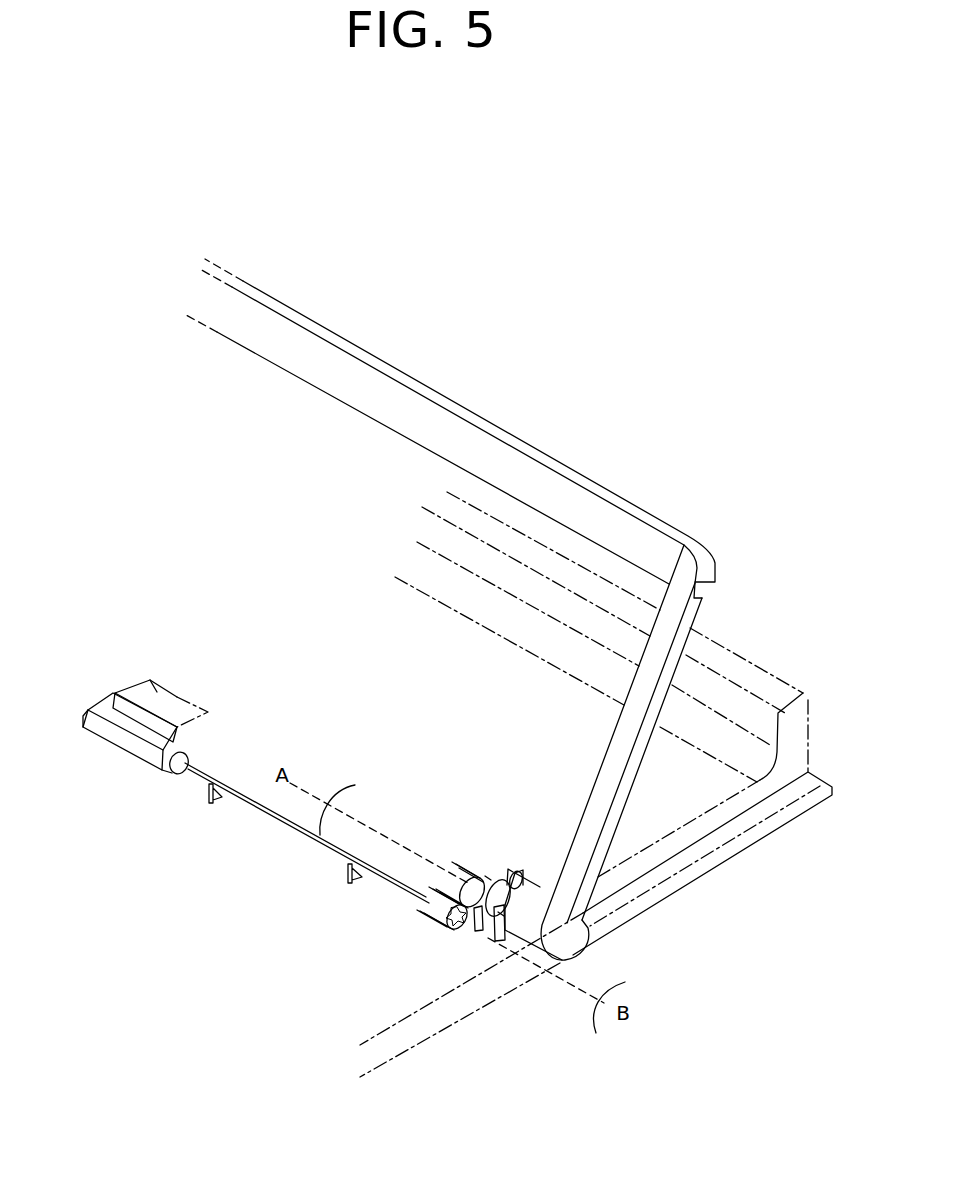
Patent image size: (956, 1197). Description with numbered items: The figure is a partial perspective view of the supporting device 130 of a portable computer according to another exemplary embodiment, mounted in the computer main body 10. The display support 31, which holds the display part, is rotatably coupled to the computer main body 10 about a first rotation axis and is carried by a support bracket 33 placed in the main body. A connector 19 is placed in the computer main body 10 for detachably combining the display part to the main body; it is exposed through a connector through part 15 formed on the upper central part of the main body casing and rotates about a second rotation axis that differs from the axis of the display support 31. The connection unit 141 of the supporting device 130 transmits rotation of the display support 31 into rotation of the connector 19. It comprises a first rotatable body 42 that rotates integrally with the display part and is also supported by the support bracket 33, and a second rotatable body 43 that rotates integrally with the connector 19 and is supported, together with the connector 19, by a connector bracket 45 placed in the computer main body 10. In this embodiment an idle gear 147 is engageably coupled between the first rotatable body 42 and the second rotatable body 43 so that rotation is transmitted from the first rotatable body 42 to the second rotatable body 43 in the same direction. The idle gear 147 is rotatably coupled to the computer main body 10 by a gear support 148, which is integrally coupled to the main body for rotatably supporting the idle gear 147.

The computer main body 10 is at (437, 1013).
The connector through part 15 is at (168, 695).
The connector 19 is at (145, 758).
The display support 31 is at (598, 778).
The support bracket 33 is at (517, 953).
The first rotatable body 42 is at (489, 882).
The second rotatable body 43 is at (445, 897).
The connector bracket 45 is at (347, 871).
The supporting device 130 is at (465, 759).
The connection unit 141 is at (518, 799).
The idle gear 147 is at (462, 878).
The gear support 148 is at (512, 872).